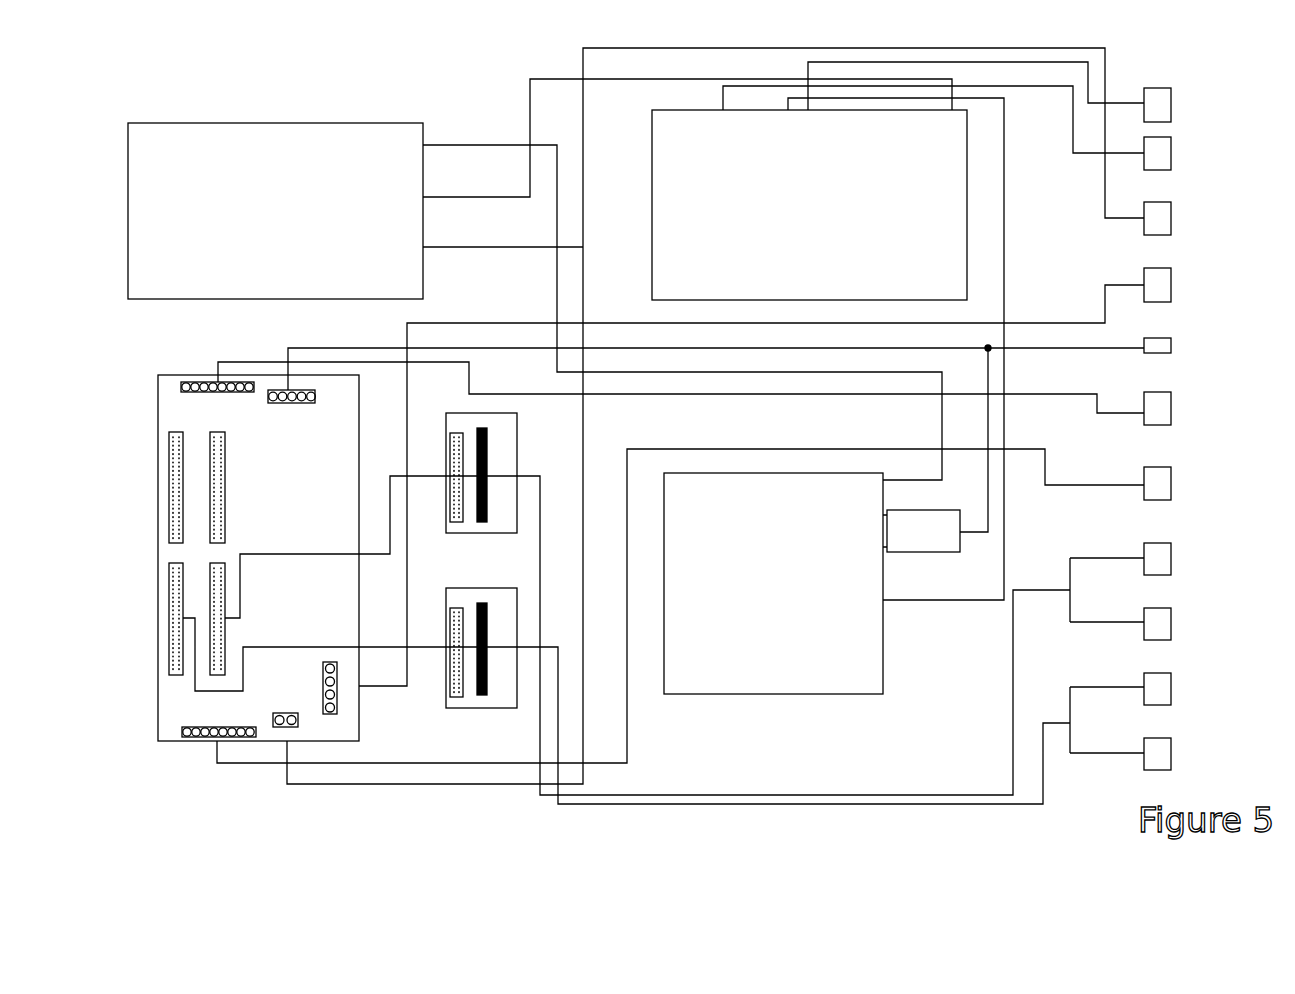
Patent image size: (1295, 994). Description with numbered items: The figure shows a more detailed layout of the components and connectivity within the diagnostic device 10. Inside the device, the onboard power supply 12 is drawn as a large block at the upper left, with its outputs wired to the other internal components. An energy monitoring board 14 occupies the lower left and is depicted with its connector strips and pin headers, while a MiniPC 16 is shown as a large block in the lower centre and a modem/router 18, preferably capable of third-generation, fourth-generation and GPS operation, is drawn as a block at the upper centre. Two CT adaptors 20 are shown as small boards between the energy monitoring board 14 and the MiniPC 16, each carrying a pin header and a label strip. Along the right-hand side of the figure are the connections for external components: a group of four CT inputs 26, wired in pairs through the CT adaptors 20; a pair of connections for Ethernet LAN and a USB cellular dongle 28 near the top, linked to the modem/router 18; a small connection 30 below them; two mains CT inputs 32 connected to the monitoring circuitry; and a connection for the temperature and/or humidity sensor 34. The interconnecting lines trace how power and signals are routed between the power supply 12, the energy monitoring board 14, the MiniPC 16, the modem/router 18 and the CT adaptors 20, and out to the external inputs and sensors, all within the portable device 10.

The diagnostic device 10 is at (142, 704).
The onboard power supply 12 is at (175, 153).
The energy monitoring board 14 is at (170, 722).
The MiniPC 16 is at (760, 675).
The modem/router 18 is at (687, 142).
The CT adaptors 20 is at (448, 527).
The CT inputs 26 is at (1171, 753).
The Ethernet LAN and USB 3G dongle 28 is at (1171, 153).
The sensor 30 is at (1160, 235).
The mains CT inputs 32 is at (1158, 425).
The temperature and/or humidity sensor 34 is at (1163, 353).